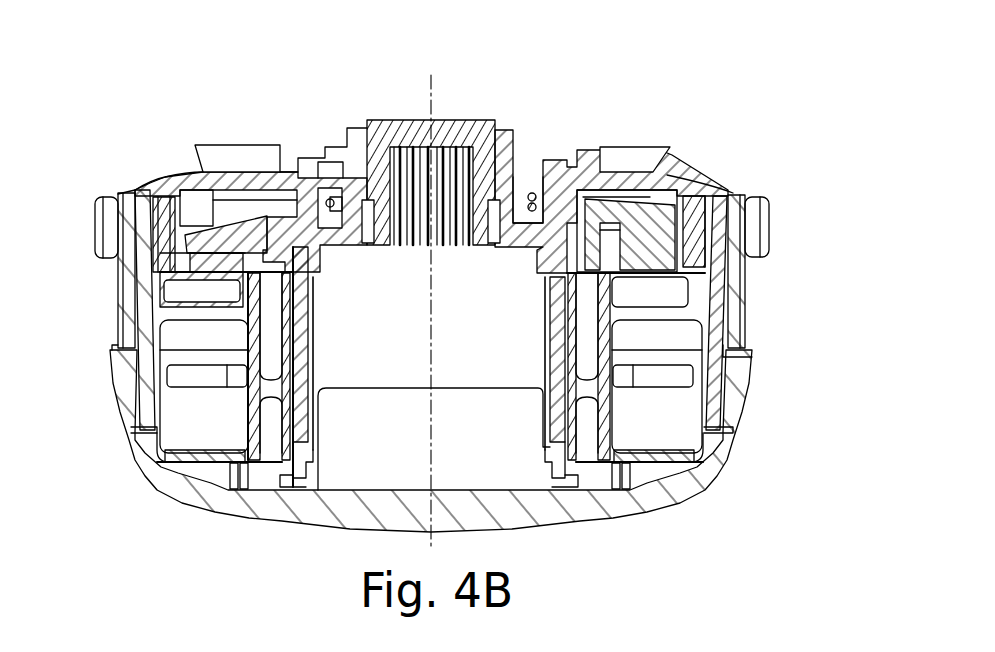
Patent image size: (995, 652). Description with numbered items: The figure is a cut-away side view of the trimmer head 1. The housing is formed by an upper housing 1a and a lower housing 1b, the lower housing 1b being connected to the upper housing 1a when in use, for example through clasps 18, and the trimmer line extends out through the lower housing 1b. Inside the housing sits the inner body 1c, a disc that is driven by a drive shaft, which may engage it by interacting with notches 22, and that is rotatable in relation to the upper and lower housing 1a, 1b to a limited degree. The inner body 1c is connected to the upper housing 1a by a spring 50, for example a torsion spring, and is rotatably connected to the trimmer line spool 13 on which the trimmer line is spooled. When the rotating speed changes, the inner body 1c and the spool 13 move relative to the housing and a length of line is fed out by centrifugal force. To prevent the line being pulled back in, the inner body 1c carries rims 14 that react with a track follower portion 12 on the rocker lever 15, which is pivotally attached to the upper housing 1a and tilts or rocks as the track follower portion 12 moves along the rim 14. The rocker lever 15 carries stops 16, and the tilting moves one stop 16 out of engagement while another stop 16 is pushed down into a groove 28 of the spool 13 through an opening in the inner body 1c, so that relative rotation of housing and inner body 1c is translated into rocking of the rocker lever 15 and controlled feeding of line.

The trimmer head 1 is at (707, 110).
The upper housing 1a is at (307, 150).
The lower housing 1b is at (258, 498).
The inner body 1c is at (164, 218).
The track follower portion 12 is at (613, 207).
The trimmer line spool 13 is at (607, 387).
The rims 14 is at (610, 232).
The rocker lever 15 is at (230, 234).
The stops 16 is at (227, 280).
The clasps 18 is at (728, 357).
The notches 22 is at (450, 180).
The groove 28 is at (732, 358).
The spring 50 is at (526, 195).